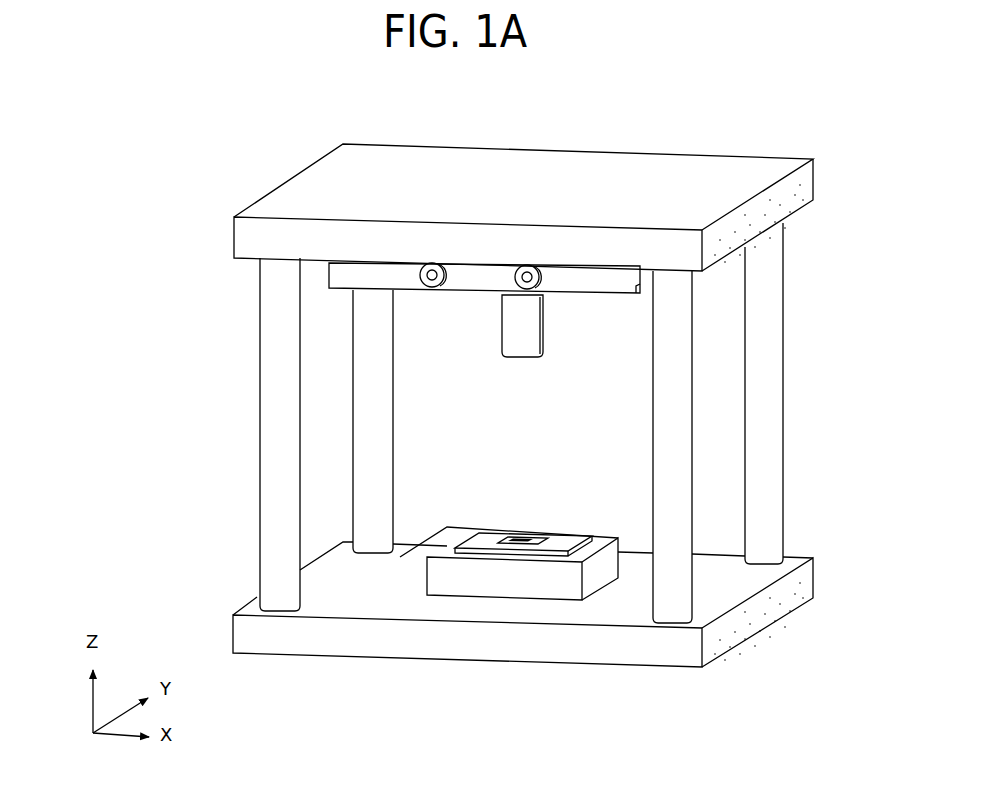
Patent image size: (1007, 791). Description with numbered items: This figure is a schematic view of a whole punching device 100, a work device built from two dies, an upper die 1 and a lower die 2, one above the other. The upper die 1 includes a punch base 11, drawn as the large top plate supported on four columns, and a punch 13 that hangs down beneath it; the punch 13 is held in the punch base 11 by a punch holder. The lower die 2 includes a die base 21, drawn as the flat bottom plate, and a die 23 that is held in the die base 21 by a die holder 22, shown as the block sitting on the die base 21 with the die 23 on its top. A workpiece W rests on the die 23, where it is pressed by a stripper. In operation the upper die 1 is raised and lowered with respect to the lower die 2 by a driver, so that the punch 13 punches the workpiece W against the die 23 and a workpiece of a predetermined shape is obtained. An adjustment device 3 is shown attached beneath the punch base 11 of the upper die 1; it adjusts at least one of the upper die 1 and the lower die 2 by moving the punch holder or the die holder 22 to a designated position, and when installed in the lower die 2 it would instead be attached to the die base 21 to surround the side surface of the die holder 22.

The upper die 1 is at (250, 153).
The punching device 100 is at (590, 138).
The punch base 11 is at (312, 192).
The adjustment device 3 is at (338, 270).
The punch 13 is at (500, 331).
The lower die 2 is at (287, 668).
The die base 21 is at (443, 640).
The die holder 22 is at (455, 578).
The die 23 is at (470, 543).
The workpiece W is at (602, 555).